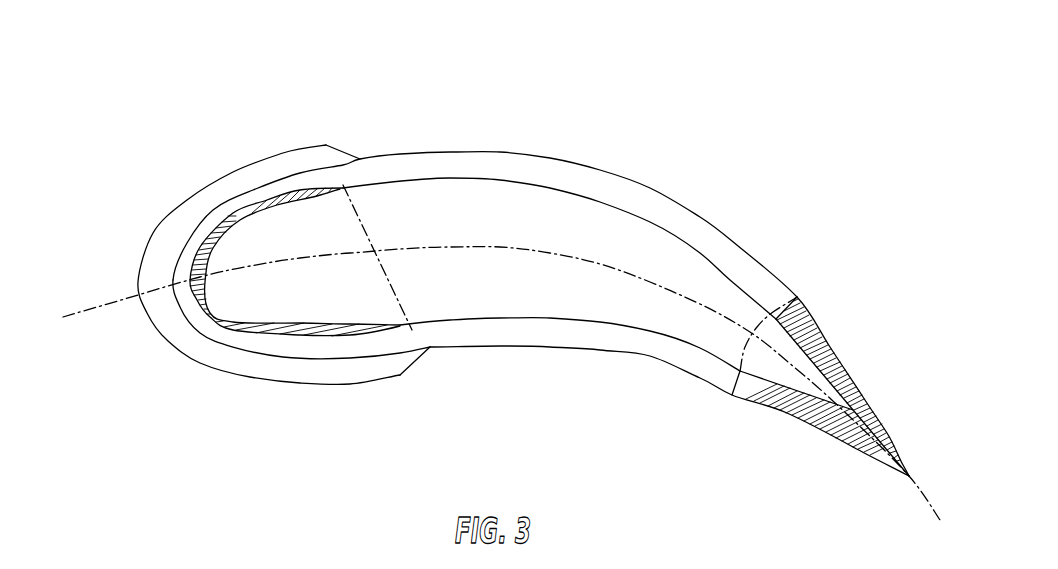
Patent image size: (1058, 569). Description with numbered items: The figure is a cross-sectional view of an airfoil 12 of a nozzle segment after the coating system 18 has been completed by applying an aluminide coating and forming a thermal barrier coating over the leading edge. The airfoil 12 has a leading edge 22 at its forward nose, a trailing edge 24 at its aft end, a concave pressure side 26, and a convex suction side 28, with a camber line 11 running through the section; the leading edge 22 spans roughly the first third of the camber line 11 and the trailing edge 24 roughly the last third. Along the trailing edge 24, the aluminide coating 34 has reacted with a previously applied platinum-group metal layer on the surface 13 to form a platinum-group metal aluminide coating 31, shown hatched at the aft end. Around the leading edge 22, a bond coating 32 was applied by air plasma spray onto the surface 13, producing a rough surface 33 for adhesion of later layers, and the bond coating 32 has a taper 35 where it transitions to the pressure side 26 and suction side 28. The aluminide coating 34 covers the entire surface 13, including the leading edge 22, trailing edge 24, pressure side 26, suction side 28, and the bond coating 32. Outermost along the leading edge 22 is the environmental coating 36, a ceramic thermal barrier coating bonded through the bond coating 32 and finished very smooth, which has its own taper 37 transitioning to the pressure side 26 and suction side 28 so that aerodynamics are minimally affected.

The camber line 11 is at (507, 248).
The airfoil 12 is at (632, 230).
The surface 13 is at (657, 345).
The coating system 18 is at (820, 302).
The leading edge 22 is at (243, 238).
The trailing edge 24 is at (847, 302).
The pressure side 26 is at (617, 373).
The suction side 28 is at (523, 133).
The platinum-group metal aluminide coating 31 is at (820, 379).
The bond coating 32 is at (257, 205).
The rough surface 33 is at (235, 330).
The aluminide coating 34 is at (559, 183).
The taper 35 is at (336, 187).
The environmental coating 36 is at (283, 160).
The taper 37 is at (366, 157).